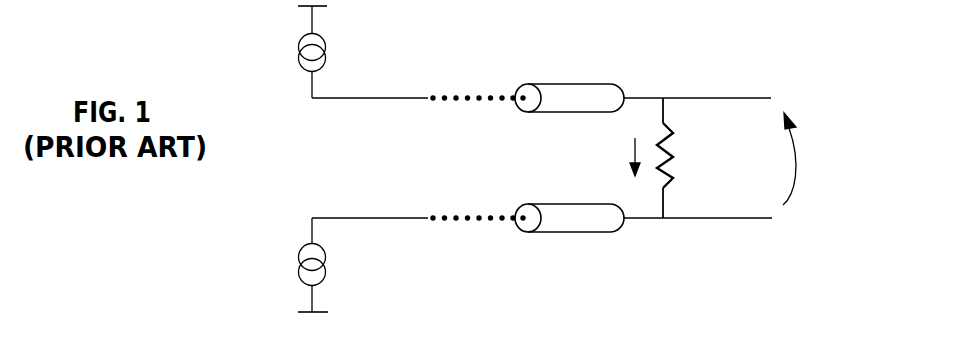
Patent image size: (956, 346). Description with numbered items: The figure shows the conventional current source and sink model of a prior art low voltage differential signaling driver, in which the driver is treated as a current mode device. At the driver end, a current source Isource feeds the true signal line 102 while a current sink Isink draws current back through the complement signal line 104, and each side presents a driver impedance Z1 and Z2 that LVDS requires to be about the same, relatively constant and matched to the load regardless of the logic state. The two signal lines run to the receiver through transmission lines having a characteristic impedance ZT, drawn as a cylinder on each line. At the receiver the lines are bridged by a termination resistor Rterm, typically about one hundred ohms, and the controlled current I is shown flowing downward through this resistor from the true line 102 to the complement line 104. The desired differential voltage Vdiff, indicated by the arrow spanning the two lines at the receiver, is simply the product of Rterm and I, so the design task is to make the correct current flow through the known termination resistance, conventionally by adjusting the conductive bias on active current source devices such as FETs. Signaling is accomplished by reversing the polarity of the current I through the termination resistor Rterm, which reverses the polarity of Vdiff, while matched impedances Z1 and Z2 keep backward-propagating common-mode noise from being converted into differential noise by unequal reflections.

The true signal line 102 is at (690, 97).
The complement signal line 104 is at (708, 220).
The current source Isource is at (347, 52).
The current sink Isink is at (337, 265).
The driver impedance Z1 is at (407, 47).
The driver impedance Z2 is at (407, 260).
The transmission line impedance ZT is at (569, 159).
The termination resistor Rterm is at (697, 158).
The controlled current I is at (623, 157).
The differential voltage Vdiff is at (822, 159).